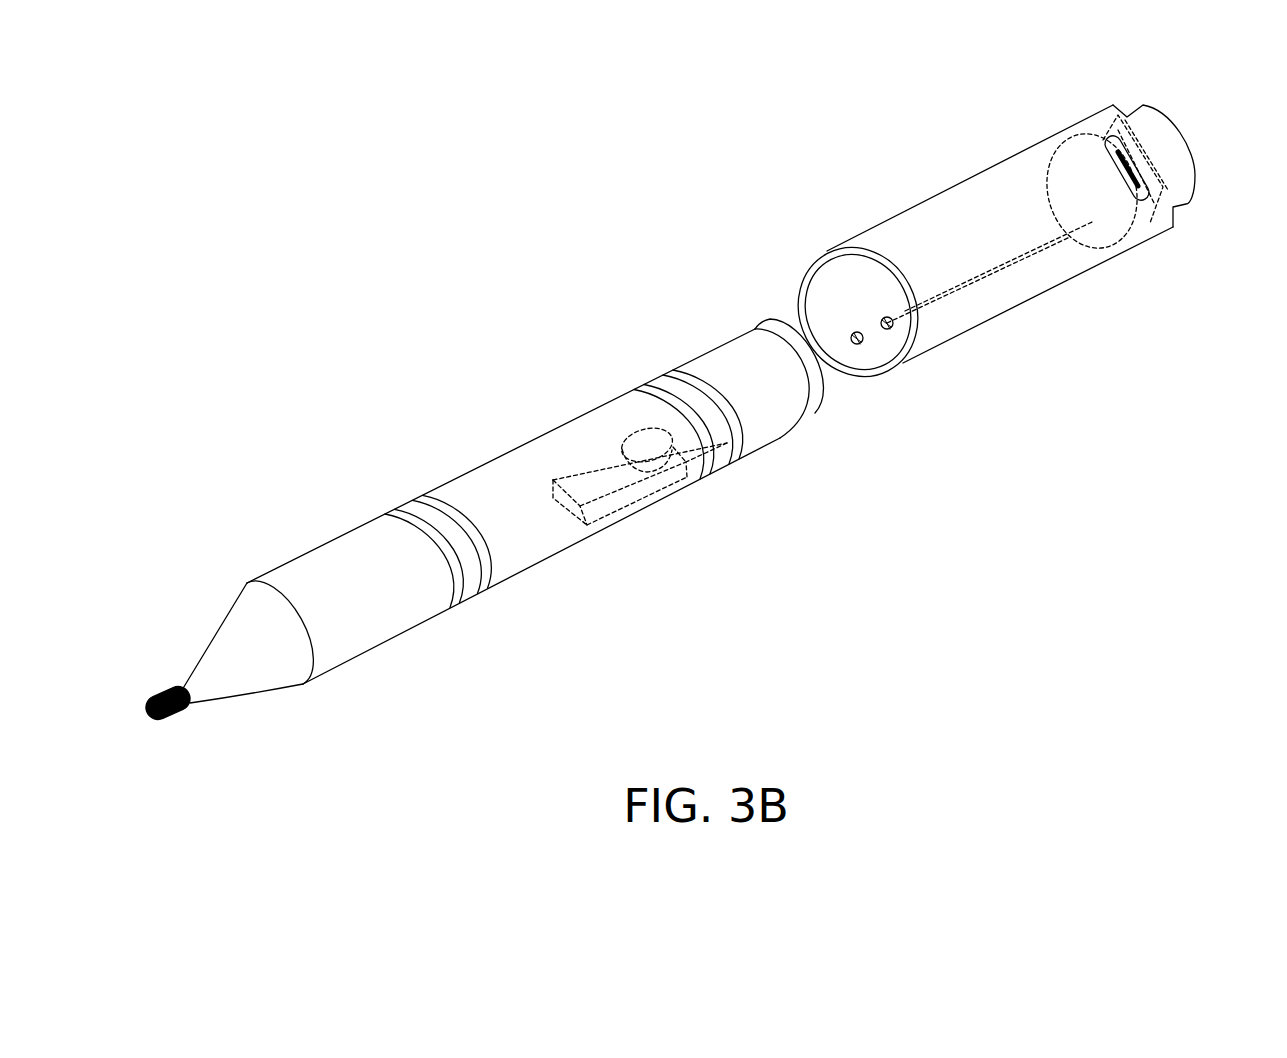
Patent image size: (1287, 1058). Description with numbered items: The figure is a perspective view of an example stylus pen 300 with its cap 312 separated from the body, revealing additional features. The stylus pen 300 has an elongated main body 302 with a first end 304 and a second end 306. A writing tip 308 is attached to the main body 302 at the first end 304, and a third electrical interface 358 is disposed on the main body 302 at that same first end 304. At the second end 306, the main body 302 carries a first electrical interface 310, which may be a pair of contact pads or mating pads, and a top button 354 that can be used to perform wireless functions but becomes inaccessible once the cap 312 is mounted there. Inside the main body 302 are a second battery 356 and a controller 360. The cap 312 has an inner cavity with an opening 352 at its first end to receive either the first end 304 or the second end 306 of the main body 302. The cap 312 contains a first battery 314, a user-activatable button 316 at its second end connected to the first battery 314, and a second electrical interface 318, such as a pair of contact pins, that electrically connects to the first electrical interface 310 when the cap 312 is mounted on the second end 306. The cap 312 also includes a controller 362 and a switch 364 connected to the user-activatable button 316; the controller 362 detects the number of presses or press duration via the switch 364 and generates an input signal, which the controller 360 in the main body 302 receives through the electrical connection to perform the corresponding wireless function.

The stylus pen 300 is at (1153, 528).
The main body 302 is at (494, 460).
The first end 304 is at (241, 715).
The second end 306 is at (799, 461).
The writing tip 308 is at (167, 720).
The first electrical interface 310 is at (739, 459).
The cap 312 is at (1042, 294).
The first battery 314 is at (1128, 238).
The user-activatable button 316 is at (1187, 210).
The second electrical interface 318 is at (887, 329).
The opening 352 is at (852, 291).
The top button 354 is at (815, 413).
The second battery 356 is at (652, 460).
The third electrical interface 358 is at (488, 588).
The controller 360 is at (612, 513).
The controller 362 is at (1110, 125).
The switch 364 is at (1150, 126).